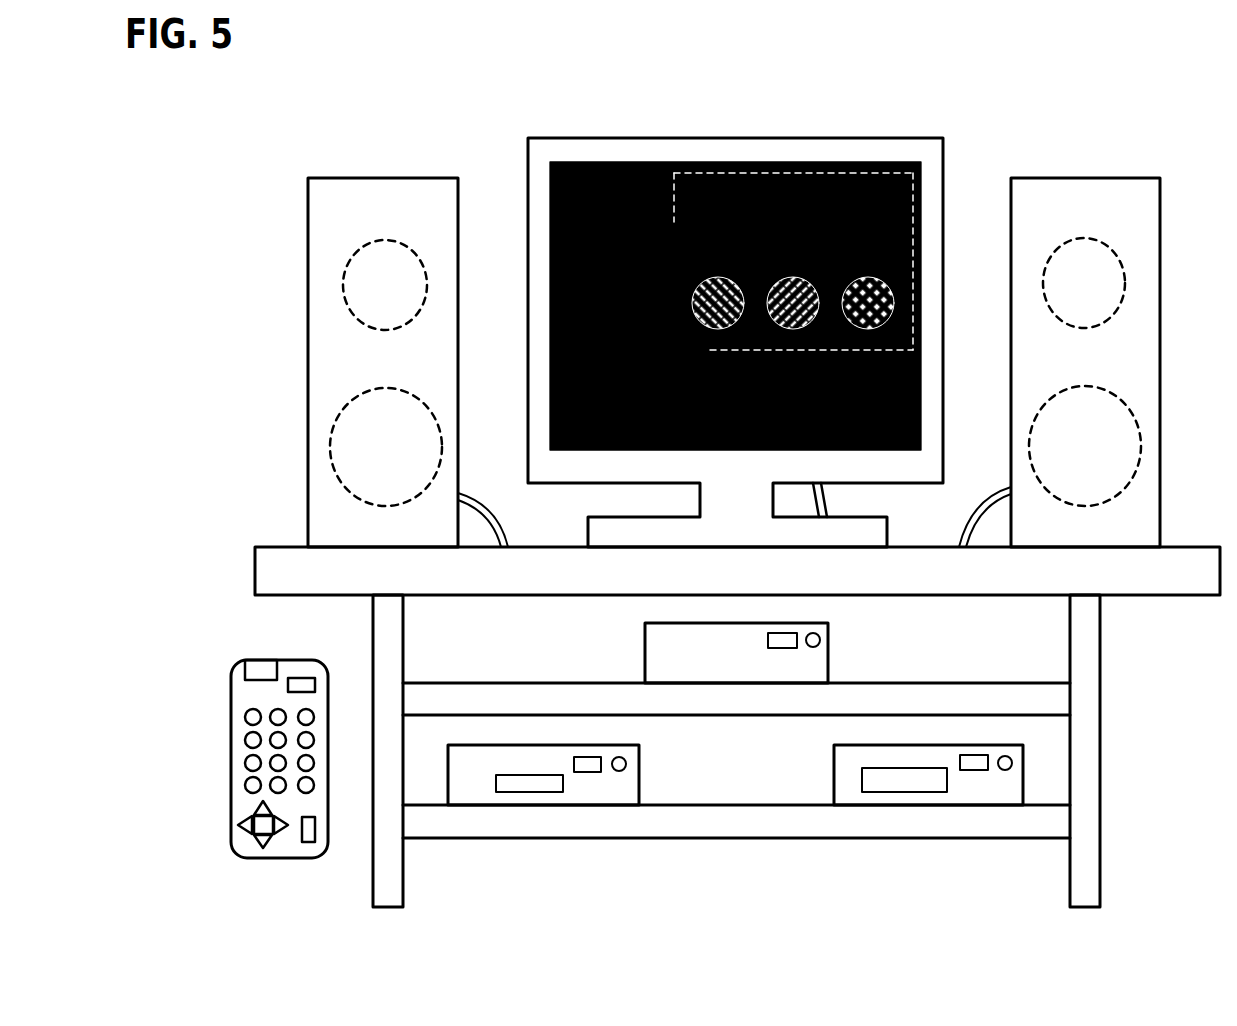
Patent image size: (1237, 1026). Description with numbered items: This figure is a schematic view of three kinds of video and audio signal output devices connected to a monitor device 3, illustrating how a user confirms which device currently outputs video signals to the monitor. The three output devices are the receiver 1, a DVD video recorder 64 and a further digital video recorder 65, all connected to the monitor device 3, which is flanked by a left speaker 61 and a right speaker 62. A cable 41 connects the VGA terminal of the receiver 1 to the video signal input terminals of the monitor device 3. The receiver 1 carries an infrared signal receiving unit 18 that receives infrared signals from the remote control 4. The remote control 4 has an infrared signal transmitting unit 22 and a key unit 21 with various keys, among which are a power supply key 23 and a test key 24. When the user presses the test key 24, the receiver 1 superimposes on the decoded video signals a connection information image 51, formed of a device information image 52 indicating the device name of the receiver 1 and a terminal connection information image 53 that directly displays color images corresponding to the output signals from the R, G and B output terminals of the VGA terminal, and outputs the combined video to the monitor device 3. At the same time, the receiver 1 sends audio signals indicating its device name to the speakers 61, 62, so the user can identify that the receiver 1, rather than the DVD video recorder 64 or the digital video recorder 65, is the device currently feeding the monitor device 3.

The monitor device 3 is at (688, 112).
The device information image 52 is at (797, 162).
The connection information image 51 is at (925, 200).
The terminal connection information image 53 is at (943, 290).
The cable 41 is at (827, 497).
The left speaker 61 is at (350, 178).
The right speaker 62 is at (1058, 178).
The receiver 1 is at (810, 665).
The infrared signal receiving unit 18 is at (800, 640).
The DVD video recorder 64 is at (586, 790).
The digital video recorder 65 is at (993, 790).
The remote control 4 is at (283, 641).
The key unit 21 is at (231, 766).
The infrared signal transmitting unit 22 is at (245, 663).
The power supply key 23 is at (300, 680).
The test key 24 is at (308, 832).